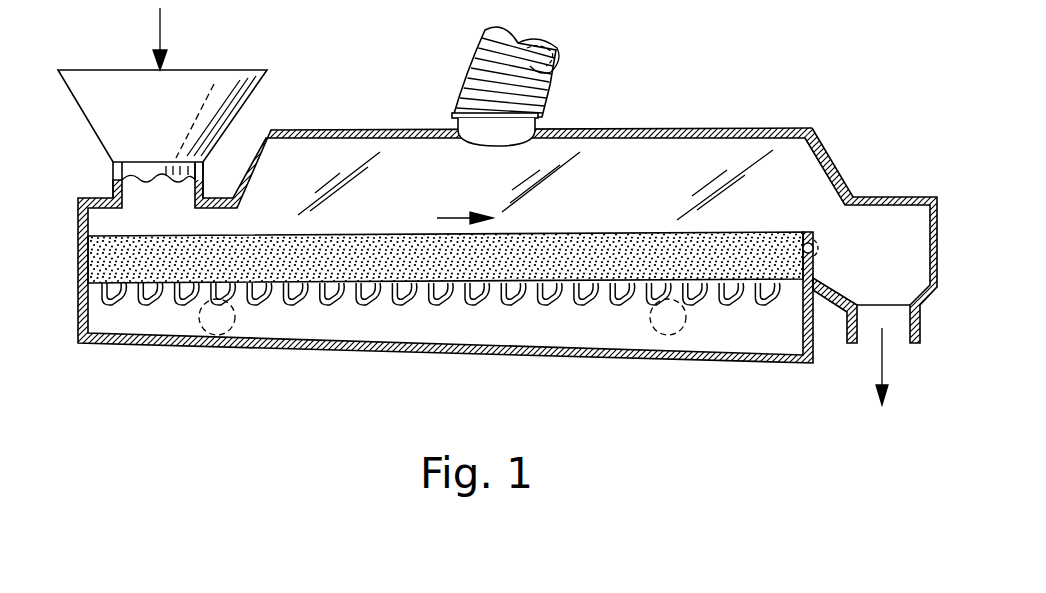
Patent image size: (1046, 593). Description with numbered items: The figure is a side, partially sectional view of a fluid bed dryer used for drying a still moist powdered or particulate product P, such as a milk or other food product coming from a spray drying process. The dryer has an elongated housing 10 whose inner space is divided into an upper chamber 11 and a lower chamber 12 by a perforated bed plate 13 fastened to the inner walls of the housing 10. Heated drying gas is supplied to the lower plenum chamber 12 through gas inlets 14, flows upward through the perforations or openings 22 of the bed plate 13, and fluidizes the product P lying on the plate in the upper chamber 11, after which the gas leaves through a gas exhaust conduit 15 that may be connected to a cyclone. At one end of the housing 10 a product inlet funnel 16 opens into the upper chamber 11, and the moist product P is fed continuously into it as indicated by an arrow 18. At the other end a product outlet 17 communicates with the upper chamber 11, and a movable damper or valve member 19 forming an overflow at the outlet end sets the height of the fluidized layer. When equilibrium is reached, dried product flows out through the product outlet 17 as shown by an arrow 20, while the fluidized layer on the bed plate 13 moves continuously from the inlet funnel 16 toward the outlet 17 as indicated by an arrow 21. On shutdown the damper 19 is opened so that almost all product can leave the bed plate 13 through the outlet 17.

The housing 10 is at (364, 130).
The upper chamber 11 is at (804, 172).
The lower chamber 12 is at (745, 347).
The perforated bed plate 13 is at (452, 300).
The gas inlets 14 is at (222, 335).
The gas exhaust conduit 15 is at (470, 47).
The product inlet funnel 16 is at (250, 68).
The product outlet 17 is at (845, 343).
The arrow 18 is at (165, 24).
The movable damper or valve member 19 is at (820, 248).
The arrow 20 is at (888, 362).
The arrow 21 is at (456, 218).
The perforations or openings 22 is at (604, 300).
The moist powdered or particulate product P is at (630, 234).